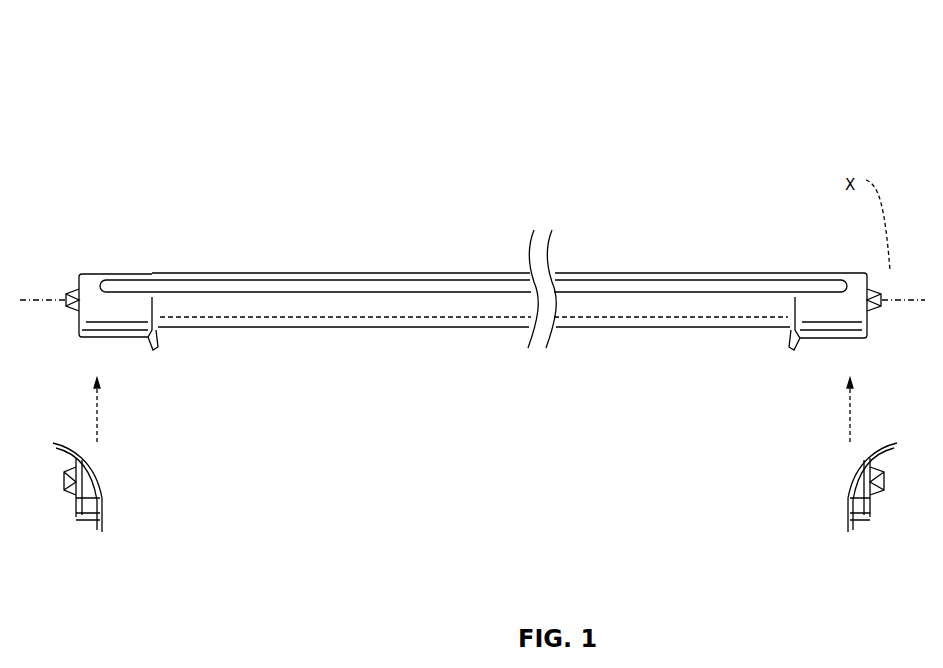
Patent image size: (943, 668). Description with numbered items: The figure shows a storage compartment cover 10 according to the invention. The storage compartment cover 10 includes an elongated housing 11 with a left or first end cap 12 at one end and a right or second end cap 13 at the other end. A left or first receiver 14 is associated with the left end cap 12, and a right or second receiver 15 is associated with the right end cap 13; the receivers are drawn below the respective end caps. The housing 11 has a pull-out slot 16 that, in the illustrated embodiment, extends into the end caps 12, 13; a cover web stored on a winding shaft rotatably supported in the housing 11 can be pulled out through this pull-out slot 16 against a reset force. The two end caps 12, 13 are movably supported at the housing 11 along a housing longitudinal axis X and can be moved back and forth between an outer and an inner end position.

The storage compartment cover 10 is at (734, 104).
The housing 11 is at (598, 252).
The first end cap 12 is at (120, 253).
The second end cap 13 is at (817, 250).
The first receiver 14 is at (118, 505).
The second receiver 15 is at (820, 496).
The pull-out slot 16 is at (374, 288).